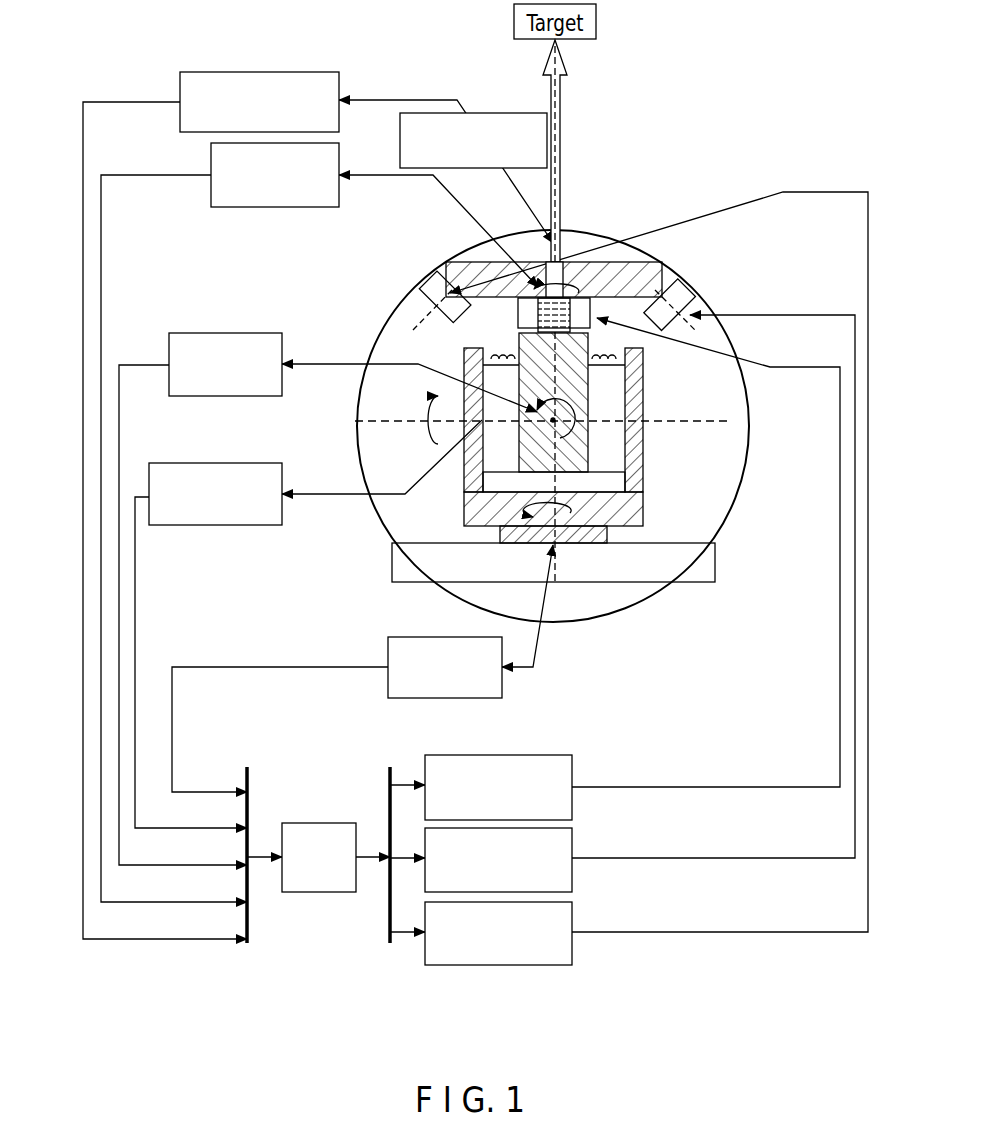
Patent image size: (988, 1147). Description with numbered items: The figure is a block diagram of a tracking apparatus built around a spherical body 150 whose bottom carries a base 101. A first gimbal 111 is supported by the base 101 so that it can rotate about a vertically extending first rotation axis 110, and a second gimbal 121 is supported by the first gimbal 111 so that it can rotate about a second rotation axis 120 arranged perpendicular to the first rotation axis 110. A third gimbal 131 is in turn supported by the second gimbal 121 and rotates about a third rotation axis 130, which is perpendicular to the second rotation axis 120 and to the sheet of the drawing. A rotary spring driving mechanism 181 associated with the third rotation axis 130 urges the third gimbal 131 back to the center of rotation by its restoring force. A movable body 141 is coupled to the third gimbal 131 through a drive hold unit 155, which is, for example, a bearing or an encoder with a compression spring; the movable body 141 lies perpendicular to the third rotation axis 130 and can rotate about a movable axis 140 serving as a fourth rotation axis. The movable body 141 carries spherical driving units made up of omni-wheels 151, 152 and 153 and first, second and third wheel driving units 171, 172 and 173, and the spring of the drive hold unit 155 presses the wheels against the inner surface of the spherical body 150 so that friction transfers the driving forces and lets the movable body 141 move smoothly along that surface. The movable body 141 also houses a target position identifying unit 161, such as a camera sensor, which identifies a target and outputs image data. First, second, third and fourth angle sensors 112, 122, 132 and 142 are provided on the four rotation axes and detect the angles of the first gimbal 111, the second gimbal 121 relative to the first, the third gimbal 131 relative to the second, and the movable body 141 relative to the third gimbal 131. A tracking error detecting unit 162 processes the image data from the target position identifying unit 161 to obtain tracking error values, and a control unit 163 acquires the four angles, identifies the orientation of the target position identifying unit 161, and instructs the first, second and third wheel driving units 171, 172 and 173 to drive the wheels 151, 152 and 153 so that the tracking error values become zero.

The base 101 is at (638, 573).
The first rotation axis 110 is at (555, 560).
The first gimbal 111 is at (638, 513).
The first angle sensor 112 is at (502, 682).
The second rotation axis 120 is at (360, 420).
The second gimbal 121 is at (612, 445).
The second angle sensor 122 is at (192, 525).
The third rotation axis 130 is at (518, 445).
The third gimbal 131 is at (577, 402).
The third angle sensor 132 is at (192, 396).
The movable axis 140 is at (560, 132).
The movable body 141 is at (660, 260).
The fourth angle sensor 142 is at (242, 207).
The spherical body 150 is at (420, 318).
The wheel (omni-wheel) 151 is at (600, 335).
The wheel (omni-wheel) 152 is at (693, 282).
The wheel (omni-wheel) 153 is at (412, 322).
The drive hold unit 155 is at (577, 303).
The target position identifying unit 161 is at (515, 113).
The tracking error detecting unit 162 is at (318, 72).
The control unit 163 is at (310, 823).
The first wheel driving unit 171 is at (572, 765).
The second wheel driving unit 172 is at (572, 835).
The third wheel driving unit 173 is at (572, 950).
The rotary spring driving mechanism 181 is at (490, 356).